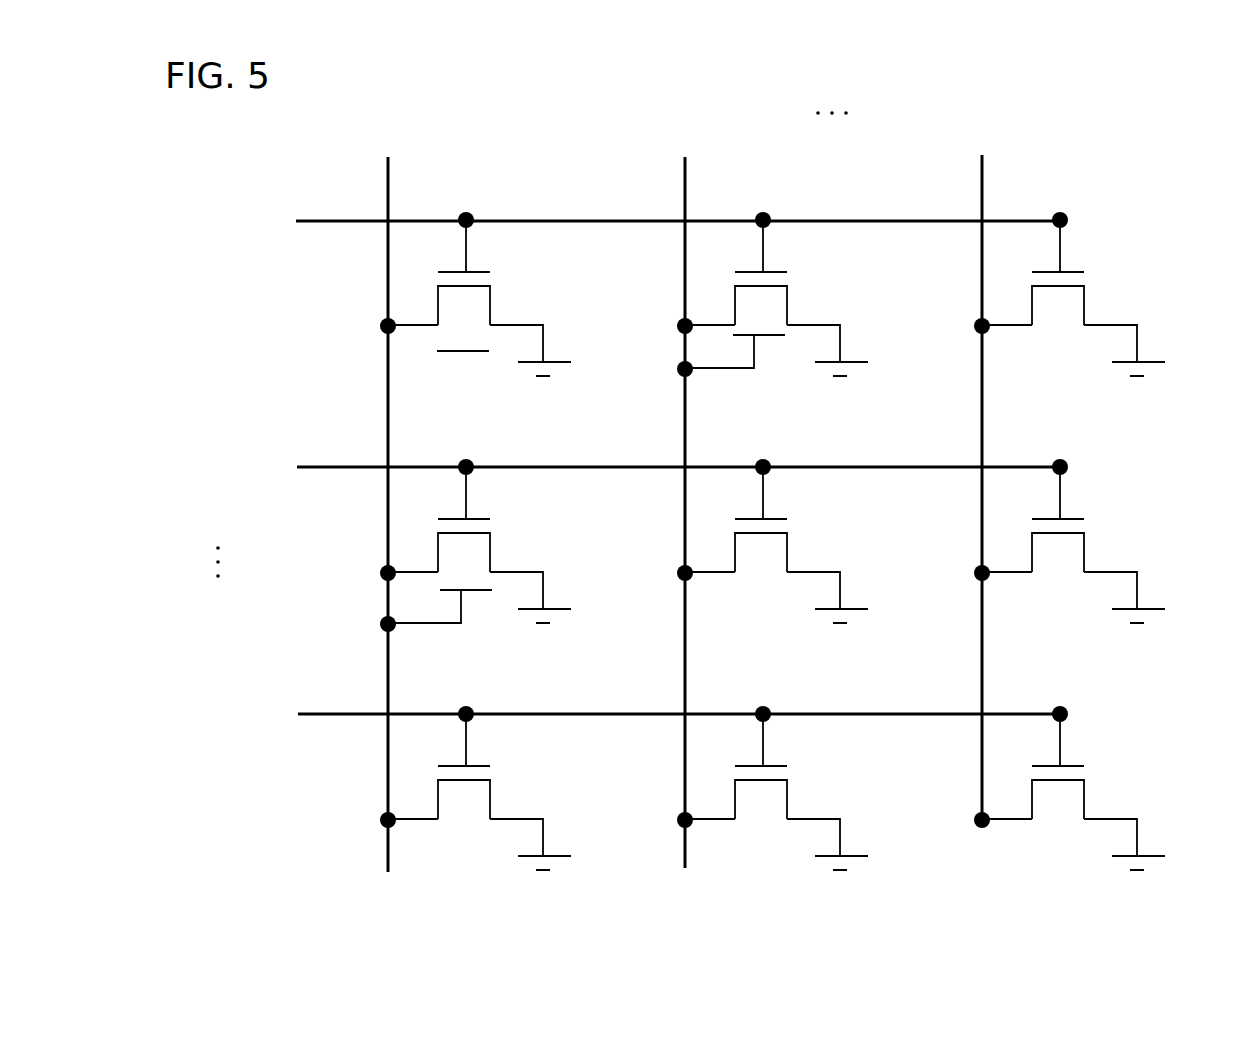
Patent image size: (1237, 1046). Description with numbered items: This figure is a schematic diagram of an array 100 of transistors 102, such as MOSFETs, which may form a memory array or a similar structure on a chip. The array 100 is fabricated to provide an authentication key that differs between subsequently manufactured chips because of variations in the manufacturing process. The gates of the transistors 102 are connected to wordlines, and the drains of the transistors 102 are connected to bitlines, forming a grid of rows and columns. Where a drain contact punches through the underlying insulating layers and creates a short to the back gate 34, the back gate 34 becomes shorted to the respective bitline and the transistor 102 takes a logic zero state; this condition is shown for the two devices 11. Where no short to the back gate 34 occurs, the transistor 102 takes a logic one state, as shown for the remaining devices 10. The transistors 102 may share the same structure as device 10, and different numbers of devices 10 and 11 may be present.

The array 100 is at (1180, 73).
The device 10 is at (564, 283).
The device 11 is at (866, 275).
The transistor 102 is at (1188, 803).
The back gate 34 is at (506, 670).